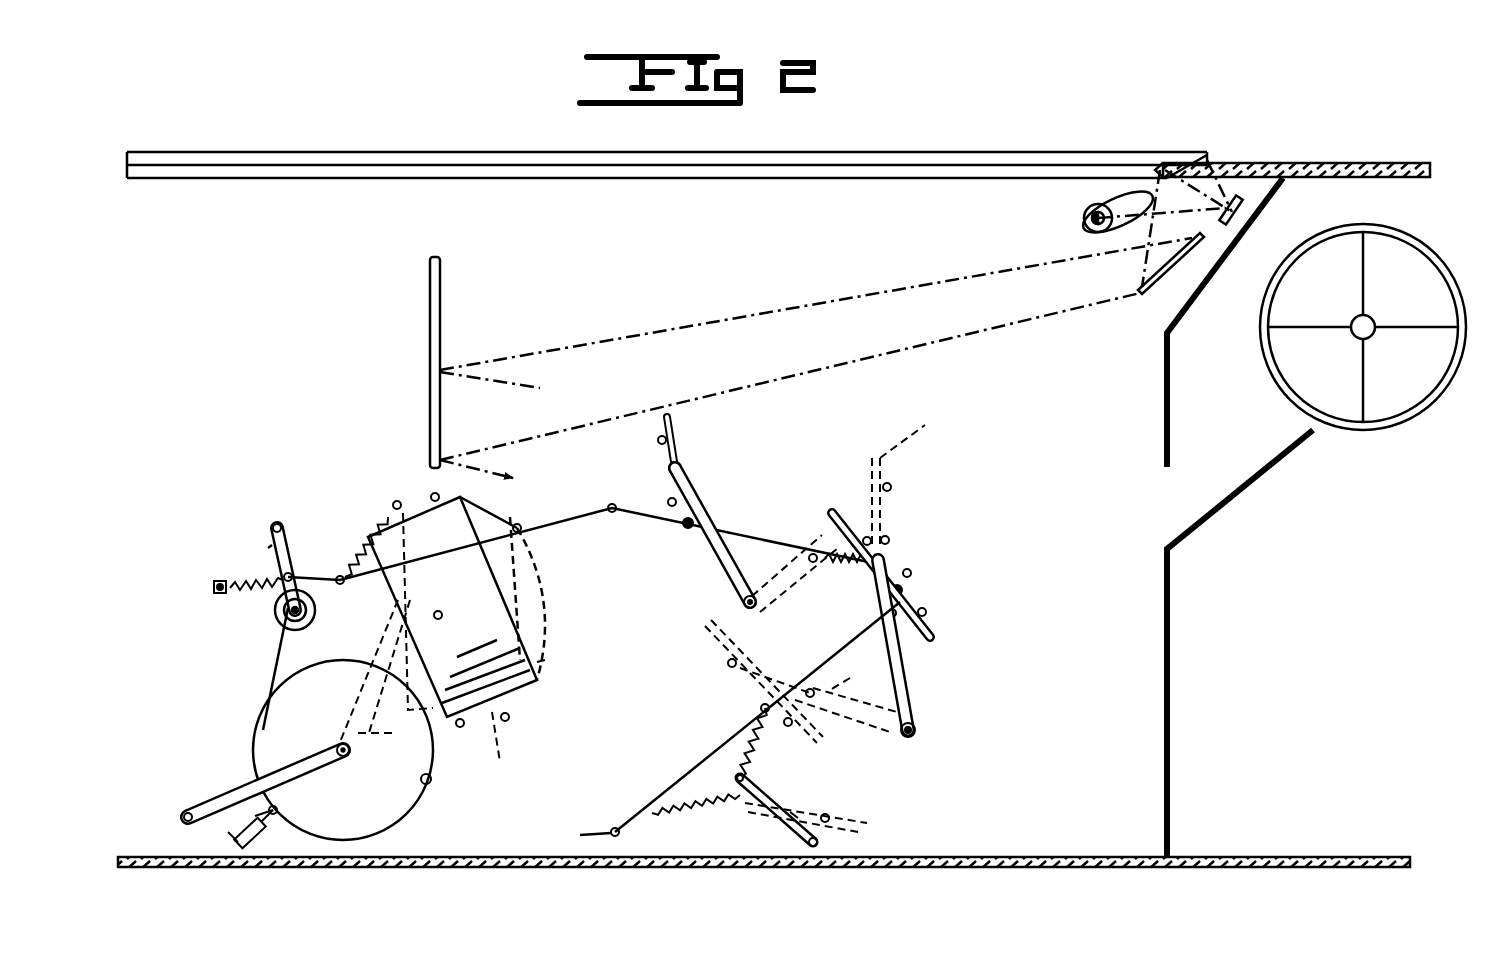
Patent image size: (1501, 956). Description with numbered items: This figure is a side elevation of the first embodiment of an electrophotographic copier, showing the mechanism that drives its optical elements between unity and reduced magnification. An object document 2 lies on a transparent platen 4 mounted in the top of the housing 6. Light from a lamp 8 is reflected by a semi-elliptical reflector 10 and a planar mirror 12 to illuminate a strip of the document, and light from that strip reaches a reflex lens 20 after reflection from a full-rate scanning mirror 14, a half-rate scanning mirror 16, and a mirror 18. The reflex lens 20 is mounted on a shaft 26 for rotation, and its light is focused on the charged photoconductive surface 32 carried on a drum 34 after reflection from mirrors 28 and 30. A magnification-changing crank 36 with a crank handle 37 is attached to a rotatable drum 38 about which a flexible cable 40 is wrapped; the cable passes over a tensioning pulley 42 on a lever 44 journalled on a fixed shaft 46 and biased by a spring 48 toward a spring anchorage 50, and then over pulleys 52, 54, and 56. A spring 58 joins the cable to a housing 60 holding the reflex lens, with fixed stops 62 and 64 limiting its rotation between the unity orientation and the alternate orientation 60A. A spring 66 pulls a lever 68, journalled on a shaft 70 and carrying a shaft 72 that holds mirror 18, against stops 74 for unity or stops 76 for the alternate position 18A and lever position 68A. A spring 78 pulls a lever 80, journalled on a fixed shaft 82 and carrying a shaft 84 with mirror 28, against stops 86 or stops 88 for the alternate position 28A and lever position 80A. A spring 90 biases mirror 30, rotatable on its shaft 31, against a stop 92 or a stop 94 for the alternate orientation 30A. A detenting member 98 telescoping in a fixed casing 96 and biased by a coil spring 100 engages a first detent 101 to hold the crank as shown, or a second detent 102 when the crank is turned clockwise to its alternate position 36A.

The object document 2 is at (1213, 150).
The transparent platen 4 is at (938, 180).
The housing 6 is at (1365, 163).
The lamp 8 is at (1086, 224).
The semi-elliptical reflector 10 is at (1100, 197).
The planar mirror 12 is at (1244, 212).
The full-rate scanning mirror 14 is at (1138, 296).
The half-rate scanning mirror 16 is at (430, 350).
The mirror 18 is at (675, 425).
The alternate position of mirror 18 18A is at (922, 474).
The reflex lens 20 is at (548, 692).
The shaft 26 is at (442, 612).
The mirror 28 is at (935, 640).
The alternate position of mirror 28 28A is at (712, 640).
The mirror 30 is at (765, 795).
The alternate angular orientation of mirror 30 30A is at (830, 823).
The shaft 31 is at (790, 812).
The photoconductive surface 32 is at (1387, 430).
The drum 34 is at (1412, 232).
The magnification-changing crank 36 is at (220, 787).
The alternate position of crank 36 36A is at (383, 682).
The crank handle 37 is at (180, 815).
The rotatable drum 38 is at (255, 720).
The flexible cable 40 is at (262, 672).
The tensioning pulley 42 is at (300, 572).
The lever 44 is at (268, 547).
The fixed shaft 46 is at (280, 525).
The spring 48 is at (273, 610).
The spring anchorage 50 is at (214, 592).
The pulley 52 is at (612, 514).
The pulley 54 is at (912, 572).
The pulley 56 is at (620, 834).
The spring 58 is at (390, 512).
The housing 60 is at (547, 660).
The alternate angular orientation of housing 60 60A is at (508, 753).
The fixed stop 62 is at (460, 728).
The fixed stop 64 is at (508, 722).
The spring 66 is at (686, 530).
The lever 68 is at (717, 510).
The alternate position of lever 68 68A is at (810, 530).
The shaft 70 is at (753, 610).
The shaft 72 is at (682, 465).
The stops 74 is at (657, 441).
The stops 76 is at (892, 485).
The spring 78 is at (903, 592).
The lever 80 is at (915, 705).
The alternate position of lever 80 80A is at (846, 694).
The fixed shaft 82 is at (916, 728).
The shaft 84 is at (888, 575).
The stops 86 is at (865, 530).
The stops 88 is at (728, 665).
The spring 90 is at (745, 742).
The stop 92 is at (808, 843).
The stop 94 is at (830, 815).
The fixed casing 96 is at (211, 841).
The detenting member 98 is at (244, 825).
The coil spring 100 is at (262, 838).
The first detent 101 is at (278, 808).
The second detent 102 is at (420, 779).